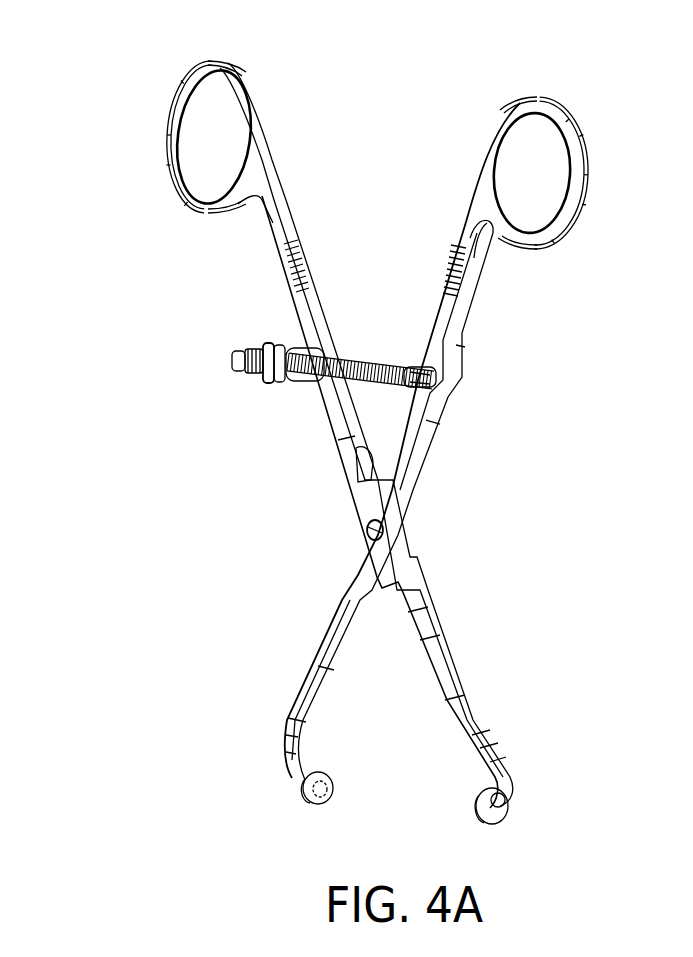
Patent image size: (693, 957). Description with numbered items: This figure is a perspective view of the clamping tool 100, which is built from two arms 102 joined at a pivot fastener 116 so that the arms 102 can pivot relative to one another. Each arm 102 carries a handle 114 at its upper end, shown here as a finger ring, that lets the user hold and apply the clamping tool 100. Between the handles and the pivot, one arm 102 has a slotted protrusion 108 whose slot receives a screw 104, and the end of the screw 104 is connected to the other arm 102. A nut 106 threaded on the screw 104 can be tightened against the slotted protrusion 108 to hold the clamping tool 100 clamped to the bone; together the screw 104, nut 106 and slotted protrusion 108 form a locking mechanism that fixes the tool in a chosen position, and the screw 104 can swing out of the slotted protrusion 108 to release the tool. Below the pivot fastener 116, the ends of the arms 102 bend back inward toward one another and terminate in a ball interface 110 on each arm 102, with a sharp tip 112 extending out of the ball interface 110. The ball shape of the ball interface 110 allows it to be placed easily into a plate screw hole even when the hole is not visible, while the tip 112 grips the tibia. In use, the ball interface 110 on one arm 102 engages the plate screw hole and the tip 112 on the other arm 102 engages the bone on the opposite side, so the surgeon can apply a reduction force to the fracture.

The clamping tool 100 is at (339, 98).
The arm 102 is at (340, 438).
The screw 104 is at (356, 338).
The nut 106 is at (268, 380).
The slotted protrusion 108 is at (308, 332).
The ball interface 110 is at (317, 777).
The tip 112 is at (327, 790).
The handle 114 is at (166, 162).
The pivot fastener 116 is at (386, 526).